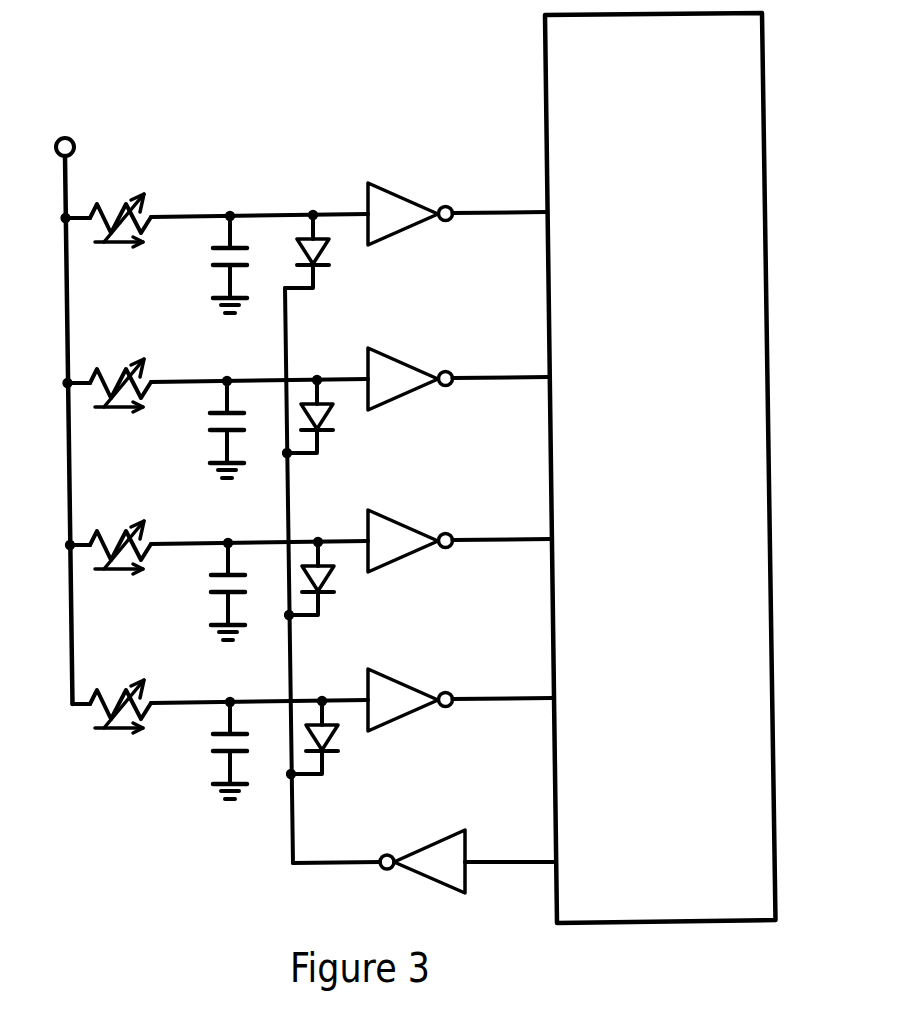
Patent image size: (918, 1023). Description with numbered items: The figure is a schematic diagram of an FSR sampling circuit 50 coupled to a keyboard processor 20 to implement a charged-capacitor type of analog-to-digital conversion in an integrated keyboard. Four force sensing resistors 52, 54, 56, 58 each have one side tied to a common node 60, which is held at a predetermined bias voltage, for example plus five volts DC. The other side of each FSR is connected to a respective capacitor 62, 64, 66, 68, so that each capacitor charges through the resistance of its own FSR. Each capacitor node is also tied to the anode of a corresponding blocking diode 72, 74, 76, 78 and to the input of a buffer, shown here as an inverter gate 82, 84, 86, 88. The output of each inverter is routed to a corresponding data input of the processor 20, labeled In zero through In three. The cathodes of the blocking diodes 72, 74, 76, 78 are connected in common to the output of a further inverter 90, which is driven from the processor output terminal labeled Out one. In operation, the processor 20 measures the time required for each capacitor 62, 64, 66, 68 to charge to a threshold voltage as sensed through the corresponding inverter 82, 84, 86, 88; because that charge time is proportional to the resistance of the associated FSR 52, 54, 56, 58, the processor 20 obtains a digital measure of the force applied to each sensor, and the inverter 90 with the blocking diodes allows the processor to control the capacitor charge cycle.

The keyboard processor 20 is at (677, 63).
The FSR sampling circuit 50 is at (108, 72).
The force sensing resistor 52 is at (147, 206).
The force sensing resistor 54 is at (147, 372).
The force sensing resistor 56 is at (147, 536).
The force sensing resistor 58 is at (147, 696).
The common node 60 is at (68, 482).
The capacitor 62 is at (212, 258).
The capacitor 64 is at (208, 420).
The capacitor 66 is at (212, 583).
The capacitor 68 is at (212, 748).
The blocking diode 72 is at (325, 248).
The blocking diode 74 is at (335, 420).
The blocking diode 76 is at (335, 577).
The blocking diode 78 is at (336, 737).
The inverter gate 82 is at (398, 193).
The inverter gate 84 is at (408, 357).
The inverter gate 86 is at (410, 522).
The inverter gate 88 is at (425, 685).
The inverter 90 is at (435, 843).